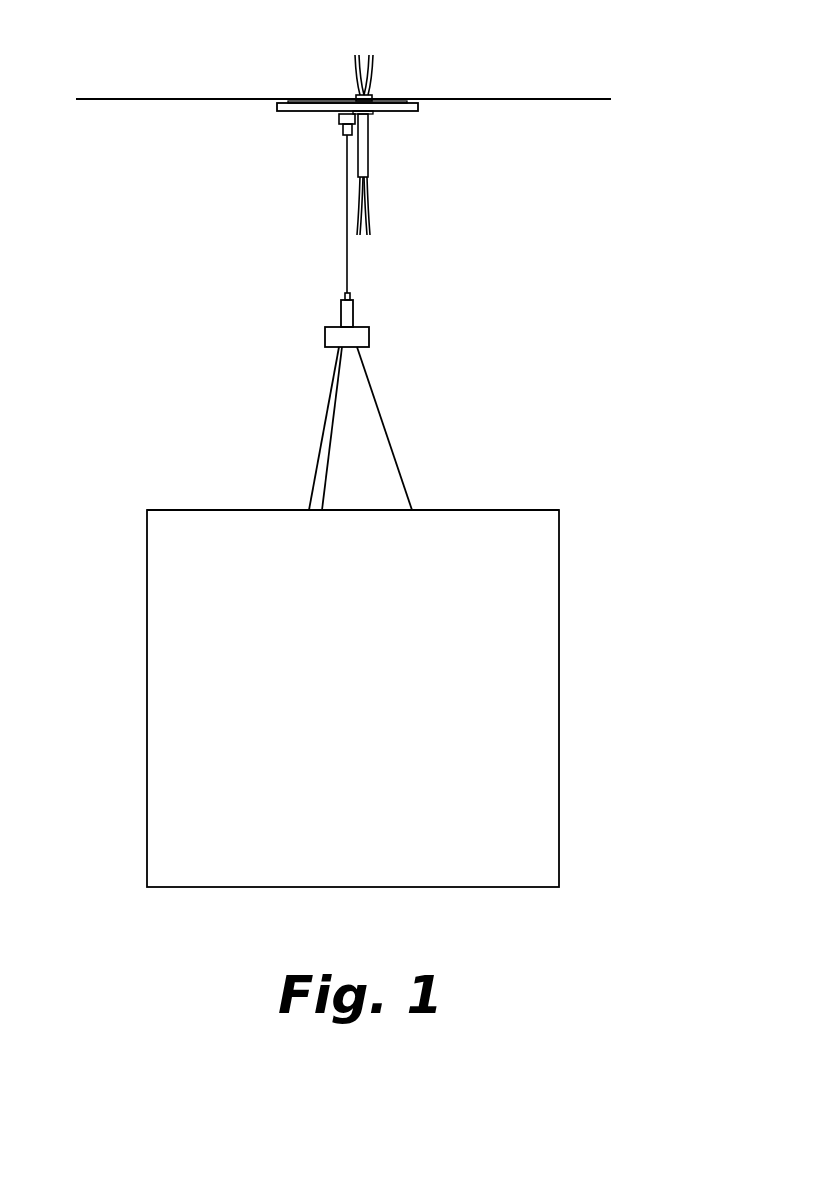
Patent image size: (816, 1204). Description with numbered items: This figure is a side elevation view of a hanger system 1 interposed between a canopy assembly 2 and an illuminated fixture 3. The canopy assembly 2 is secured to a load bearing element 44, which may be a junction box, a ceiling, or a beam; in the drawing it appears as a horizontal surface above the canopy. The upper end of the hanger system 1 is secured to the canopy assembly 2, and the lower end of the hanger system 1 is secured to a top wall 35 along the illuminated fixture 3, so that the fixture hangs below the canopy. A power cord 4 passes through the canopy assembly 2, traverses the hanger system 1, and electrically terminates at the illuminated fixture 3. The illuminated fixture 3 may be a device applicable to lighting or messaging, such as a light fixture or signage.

The hanger system 1 is at (222, 243).
The canopy assembly 2 is at (418, 107).
The illuminated fixture 3 is at (559, 543).
The power cord 4 is at (368, 172).
The top wall 35 is at (190, 510).
The load bearing element 44 is at (210, 72).